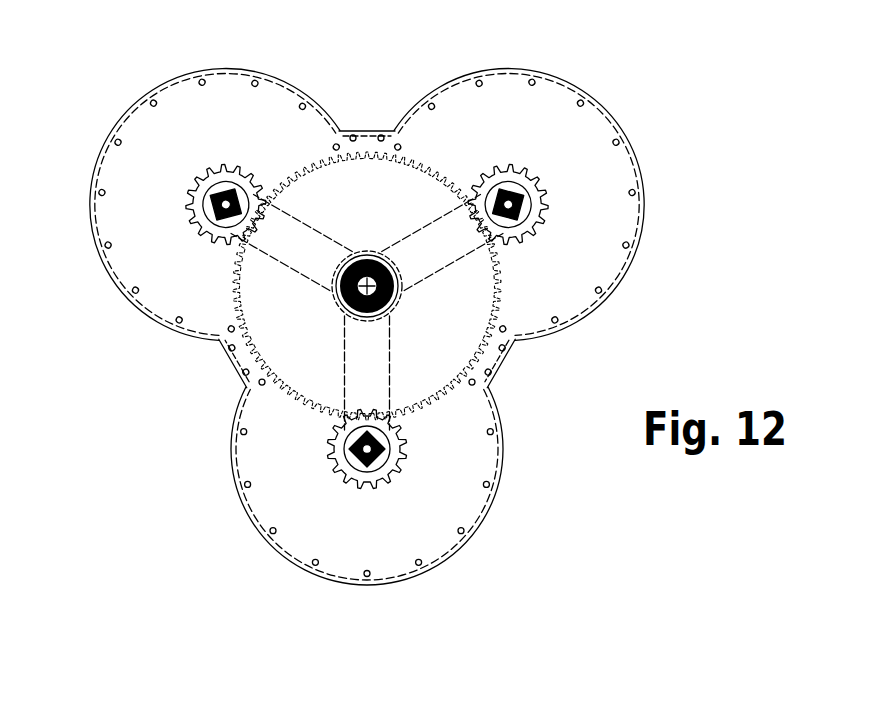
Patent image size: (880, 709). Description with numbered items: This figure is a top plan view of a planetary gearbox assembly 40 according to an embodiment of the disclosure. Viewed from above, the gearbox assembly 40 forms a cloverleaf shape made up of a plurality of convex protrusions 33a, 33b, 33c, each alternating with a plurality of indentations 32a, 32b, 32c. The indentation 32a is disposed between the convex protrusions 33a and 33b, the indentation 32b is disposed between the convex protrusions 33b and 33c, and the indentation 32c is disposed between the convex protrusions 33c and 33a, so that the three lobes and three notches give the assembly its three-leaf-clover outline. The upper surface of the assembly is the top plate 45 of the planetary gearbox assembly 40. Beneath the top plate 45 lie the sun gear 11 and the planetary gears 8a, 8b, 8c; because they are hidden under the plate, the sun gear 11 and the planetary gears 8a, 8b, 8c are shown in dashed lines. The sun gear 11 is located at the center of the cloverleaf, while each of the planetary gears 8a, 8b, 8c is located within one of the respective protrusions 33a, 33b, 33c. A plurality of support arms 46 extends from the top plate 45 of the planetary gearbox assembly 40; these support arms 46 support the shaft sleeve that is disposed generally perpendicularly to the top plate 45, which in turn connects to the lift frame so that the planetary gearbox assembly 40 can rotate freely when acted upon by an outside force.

The planetary gearbox assembly 40 is at (597, 99).
The convex protrusion 33a is at (558, 82).
The convex protrusion 33b is at (135, 106).
The convex protrusion 33c is at (490, 507).
The indentation 32a is at (374, 130).
The indentation 32b is at (230, 358).
The indentation 32c is at (502, 362).
The top plate 45 is at (487, 150).
The sun gear 11 is at (367, 210).
The support arm 46 is at (288, 246).
The planetary gear 8a is at (518, 178).
The planetary gear 8b is at (214, 173).
The planetary gear 8c is at (362, 483).